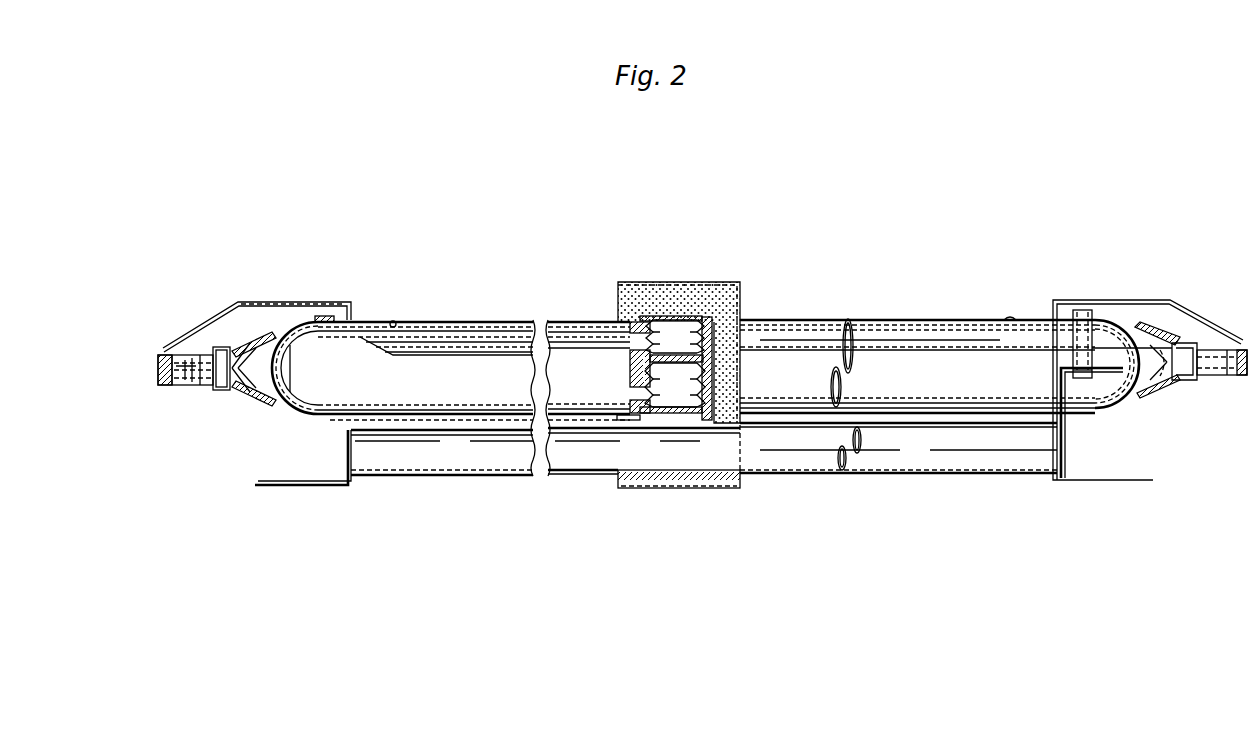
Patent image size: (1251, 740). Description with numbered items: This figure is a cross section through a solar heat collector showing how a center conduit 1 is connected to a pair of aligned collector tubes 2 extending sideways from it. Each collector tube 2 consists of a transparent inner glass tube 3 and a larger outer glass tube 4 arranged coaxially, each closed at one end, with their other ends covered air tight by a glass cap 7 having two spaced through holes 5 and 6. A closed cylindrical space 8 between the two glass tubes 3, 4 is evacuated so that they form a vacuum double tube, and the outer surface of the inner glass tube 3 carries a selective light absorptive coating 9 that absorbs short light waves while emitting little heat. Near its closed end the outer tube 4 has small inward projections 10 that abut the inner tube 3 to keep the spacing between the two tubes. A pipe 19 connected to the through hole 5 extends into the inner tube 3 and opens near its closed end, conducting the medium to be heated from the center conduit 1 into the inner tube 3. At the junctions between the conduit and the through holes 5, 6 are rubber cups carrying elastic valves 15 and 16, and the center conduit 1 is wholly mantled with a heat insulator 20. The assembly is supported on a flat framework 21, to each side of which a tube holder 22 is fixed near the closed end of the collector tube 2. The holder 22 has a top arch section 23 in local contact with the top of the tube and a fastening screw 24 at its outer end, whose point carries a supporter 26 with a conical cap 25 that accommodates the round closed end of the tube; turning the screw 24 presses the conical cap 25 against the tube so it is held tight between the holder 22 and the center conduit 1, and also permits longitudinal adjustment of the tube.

The center conduit 1 is at (699, 328).
The collector tube 2 is at (934, 350).
The inner glass tube 3 is at (338, 337).
The outer glass tube 4 is at (500, 322).
The through hole 5 is at (616, 325).
The through hole 6 is at (640, 392).
The glass cap 7 is at (637, 320).
The cylindrical space 8 is at (465, 322).
The selective light absorptive coating 9 is at (432, 333).
The small projections 10 is at (395, 321).
The elastic valve 15 is at (660, 326).
The elastic valve 16 is at (697, 403).
The pipe 19 is at (412, 350).
The heat insulator 20 is at (744, 298).
The framework 21 is at (297, 488).
The tube holder 22 is at (182, 386).
The top arch section 23 is at (328, 316).
The fastening screw 24 is at (186, 386).
The conical cap 25 is at (257, 395).
The supporter 26 is at (228, 390).